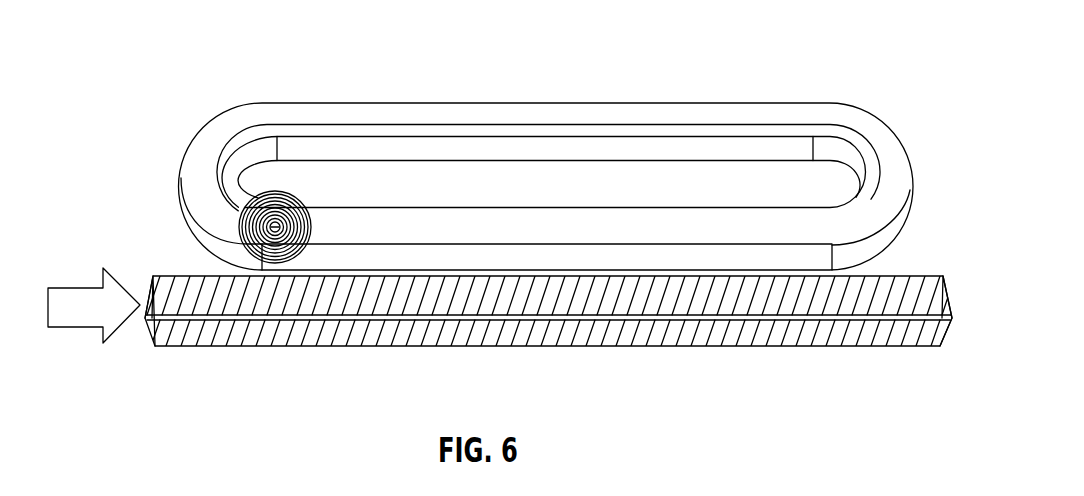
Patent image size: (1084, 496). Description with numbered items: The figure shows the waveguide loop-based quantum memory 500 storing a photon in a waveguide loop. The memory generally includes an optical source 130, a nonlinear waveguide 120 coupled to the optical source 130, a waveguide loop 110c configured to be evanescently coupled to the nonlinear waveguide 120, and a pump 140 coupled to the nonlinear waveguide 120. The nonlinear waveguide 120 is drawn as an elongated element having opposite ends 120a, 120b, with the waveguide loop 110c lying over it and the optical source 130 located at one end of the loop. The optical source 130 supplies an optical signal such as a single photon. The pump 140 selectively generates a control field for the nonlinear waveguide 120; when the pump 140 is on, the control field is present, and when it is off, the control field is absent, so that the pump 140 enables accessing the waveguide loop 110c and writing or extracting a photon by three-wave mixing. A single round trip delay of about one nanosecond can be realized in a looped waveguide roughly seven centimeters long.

The waveguide loop-based quantum memory 500 is at (130, 42).
The waveguide loop 110c is at (737, 117).
The optical source 130 is at (275, 227).
The nonlinear waveguide 120 is at (596, 338).
The first end of substrate 120a is at (150, 320).
The second end of substrate 120b is at (948, 332).
The pump 140 is at (65, 310).